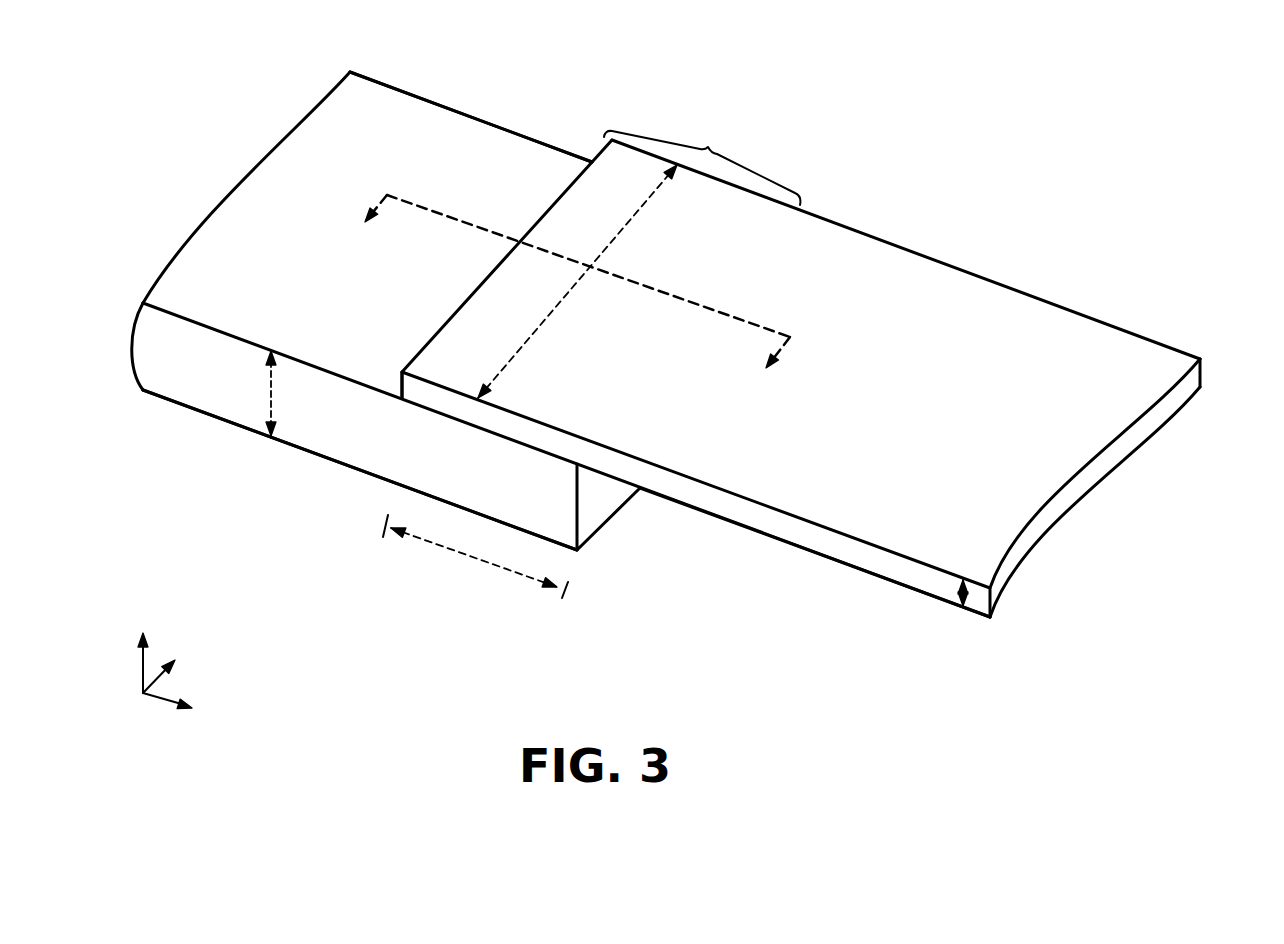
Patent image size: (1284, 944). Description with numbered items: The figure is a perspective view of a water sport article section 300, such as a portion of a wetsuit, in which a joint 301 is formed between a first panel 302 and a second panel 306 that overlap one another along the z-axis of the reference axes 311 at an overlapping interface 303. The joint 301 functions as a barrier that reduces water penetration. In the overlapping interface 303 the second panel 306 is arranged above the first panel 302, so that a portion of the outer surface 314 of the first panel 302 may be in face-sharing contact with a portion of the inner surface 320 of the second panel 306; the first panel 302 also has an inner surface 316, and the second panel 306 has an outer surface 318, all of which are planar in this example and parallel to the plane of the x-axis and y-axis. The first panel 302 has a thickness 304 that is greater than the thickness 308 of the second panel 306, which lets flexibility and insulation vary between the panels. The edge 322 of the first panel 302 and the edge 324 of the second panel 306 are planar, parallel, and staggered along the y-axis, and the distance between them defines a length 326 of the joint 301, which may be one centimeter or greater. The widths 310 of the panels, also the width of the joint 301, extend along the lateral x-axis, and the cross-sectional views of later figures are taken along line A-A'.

The water sport article section 300 is at (1203, 70).
The joint 301 is at (523, 203).
The first panel 302 is at (561, 344).
The overlapping interface 303 is at (702, 166).
The thickness of first panel 304 is at (270, 400).
The second panel 306 is at (801, 378).
The thickness of second panel 308 is at (960, 597).
The width 310 is at (620, 232).
The reference axes 311 is at (178, 615).
The outer surface of first panel 314 is at (412, 136).
The inner surface of first panel 316 is at (312, 453).
The outer surface of second panel 318 is at (838, 272).
The inner surface of second panel 320 is at (825, 560).
The edge of first panel 322 is at (592, 505).
The edge of second panel 324 is at (398, 382).
The length of joint 326 is at (518, 575).